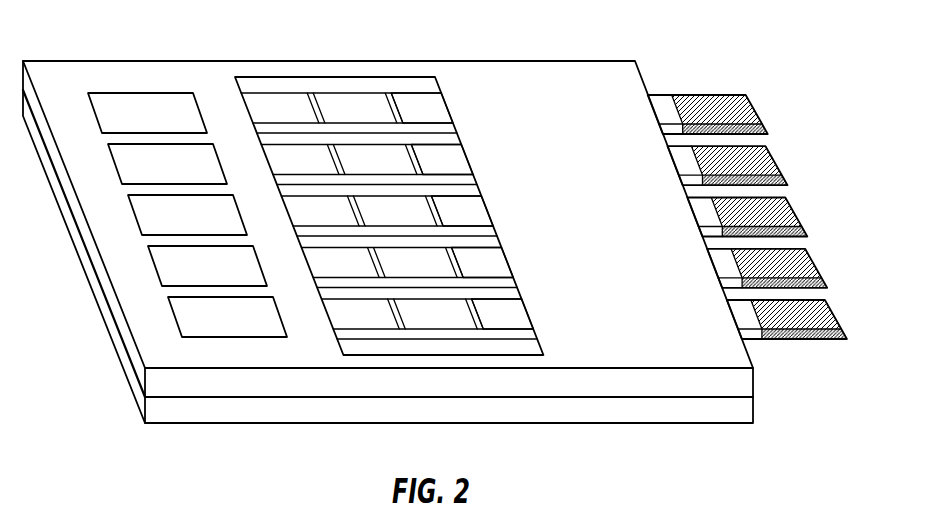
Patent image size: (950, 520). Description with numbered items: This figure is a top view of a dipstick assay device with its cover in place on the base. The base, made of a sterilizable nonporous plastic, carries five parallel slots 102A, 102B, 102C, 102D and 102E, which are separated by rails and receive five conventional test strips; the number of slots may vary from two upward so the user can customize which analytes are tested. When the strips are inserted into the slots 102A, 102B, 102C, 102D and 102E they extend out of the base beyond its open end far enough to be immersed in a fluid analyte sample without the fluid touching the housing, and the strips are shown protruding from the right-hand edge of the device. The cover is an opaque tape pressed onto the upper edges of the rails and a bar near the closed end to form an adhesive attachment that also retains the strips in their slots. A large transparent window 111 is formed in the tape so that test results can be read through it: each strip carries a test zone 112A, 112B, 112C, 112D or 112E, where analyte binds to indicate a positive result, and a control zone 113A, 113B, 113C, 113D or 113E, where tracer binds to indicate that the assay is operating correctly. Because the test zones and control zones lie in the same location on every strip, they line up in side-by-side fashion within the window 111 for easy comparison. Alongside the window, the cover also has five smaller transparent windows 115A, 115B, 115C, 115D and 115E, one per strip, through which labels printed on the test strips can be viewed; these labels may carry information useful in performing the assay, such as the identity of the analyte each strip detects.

The transparent window 111 is at (350, 92).
The test zone 112A is at (319, 108).
The test zone 112B is at (339, 160).
The test zone 112C is at (359, 211).
The test zone 112D is at (379, 262).
The test zone 112E is at (399, 314).
The control zone 113A is at (401, 117).
The control zone 113B is at (421, 168).
The control zone 113C is at (441, 220).
The control zone 113D is at (461, 272).
The control zone 113E is at (481, 323).
The transparent window 115A is at (175, 126).
The transparent window 115B is at (195, 177).
The transparent window 115C is at (215, 228).
The transparent window 115D is at (235, 279).
The transparent window 115E is at (255, 330).
The slot 102A is at (754, 109).
The slot 102B is at (774, 160).
The slot 102C is at (793, 212).
The slot 102D is at (813, 263).
The slot 102E is at (833, 314).